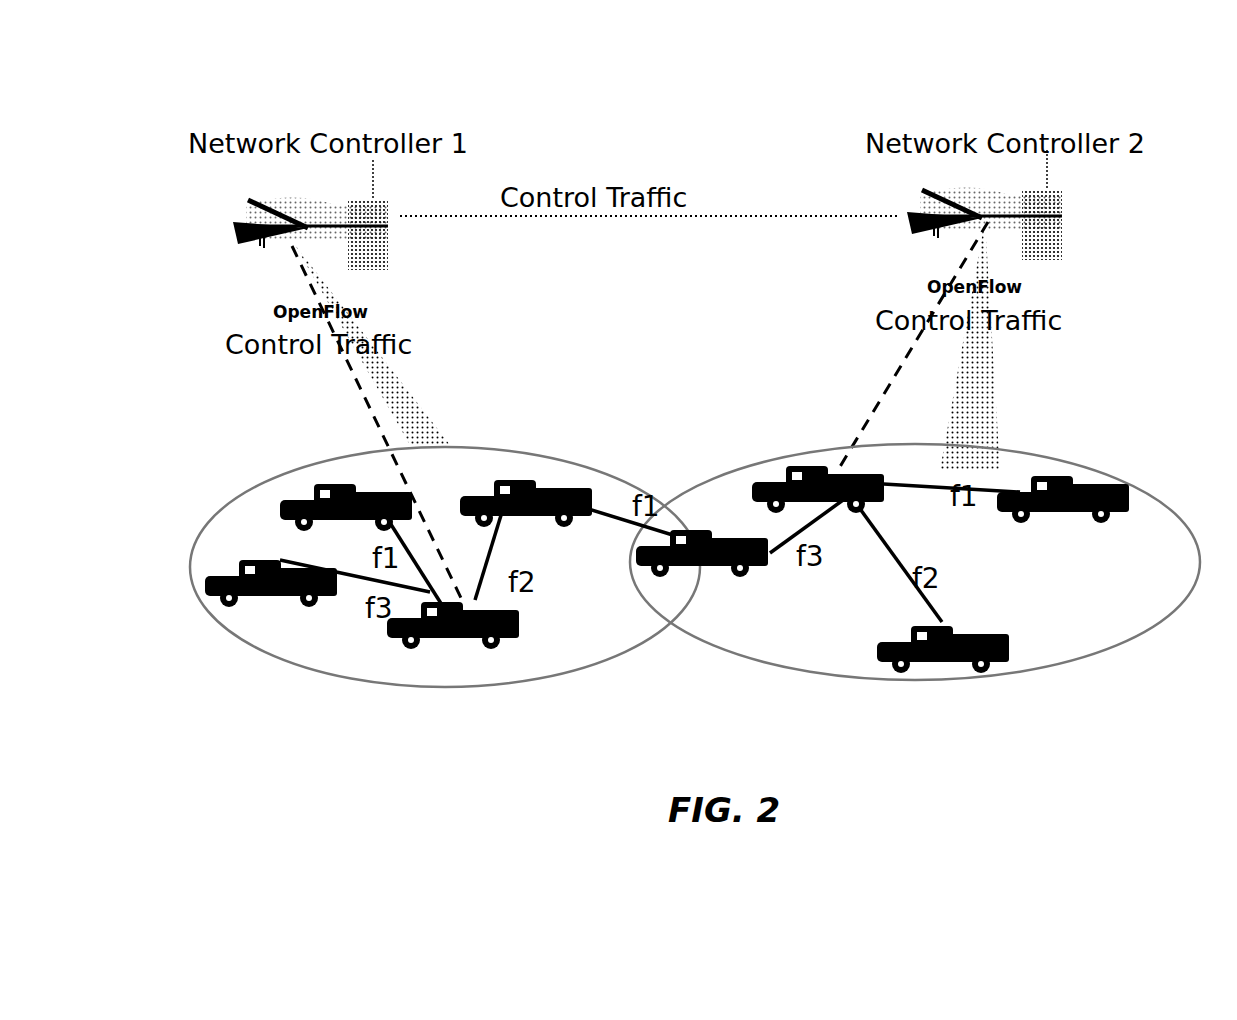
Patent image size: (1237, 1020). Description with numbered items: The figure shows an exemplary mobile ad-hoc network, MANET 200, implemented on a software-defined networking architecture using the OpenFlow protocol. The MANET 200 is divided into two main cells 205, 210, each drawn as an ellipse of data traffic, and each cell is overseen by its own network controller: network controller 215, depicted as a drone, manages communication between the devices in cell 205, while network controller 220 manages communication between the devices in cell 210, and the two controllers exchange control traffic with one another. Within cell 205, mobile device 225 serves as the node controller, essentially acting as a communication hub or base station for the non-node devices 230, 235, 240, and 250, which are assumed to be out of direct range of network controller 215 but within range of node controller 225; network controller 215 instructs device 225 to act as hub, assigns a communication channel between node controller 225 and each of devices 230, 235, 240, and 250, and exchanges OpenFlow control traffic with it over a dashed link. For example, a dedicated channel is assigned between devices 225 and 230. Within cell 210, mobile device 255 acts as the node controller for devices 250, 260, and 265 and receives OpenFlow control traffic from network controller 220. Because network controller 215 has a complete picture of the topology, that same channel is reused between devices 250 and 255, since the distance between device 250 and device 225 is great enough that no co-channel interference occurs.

The MANET 200 is at (1150, 82).
The cell 205 is at (250, 635).
The cell 210 is at (812, 680).
The network controller 215 is at (255, 235).
The network controller 220 is at (925, 226).
The mobile device 225 is at (430, 642).
The mobile device 230 is at (272, 598).
The mobile device 235 is at (290, 513).
The mobile device 240 is at (530, 522).
The mobile device 250 is at (700, 570).
The mobile device 255 is at (818, 462).
The mobile device 260 is at (1112, 480).
The mobile device 265 is at (925, 676).